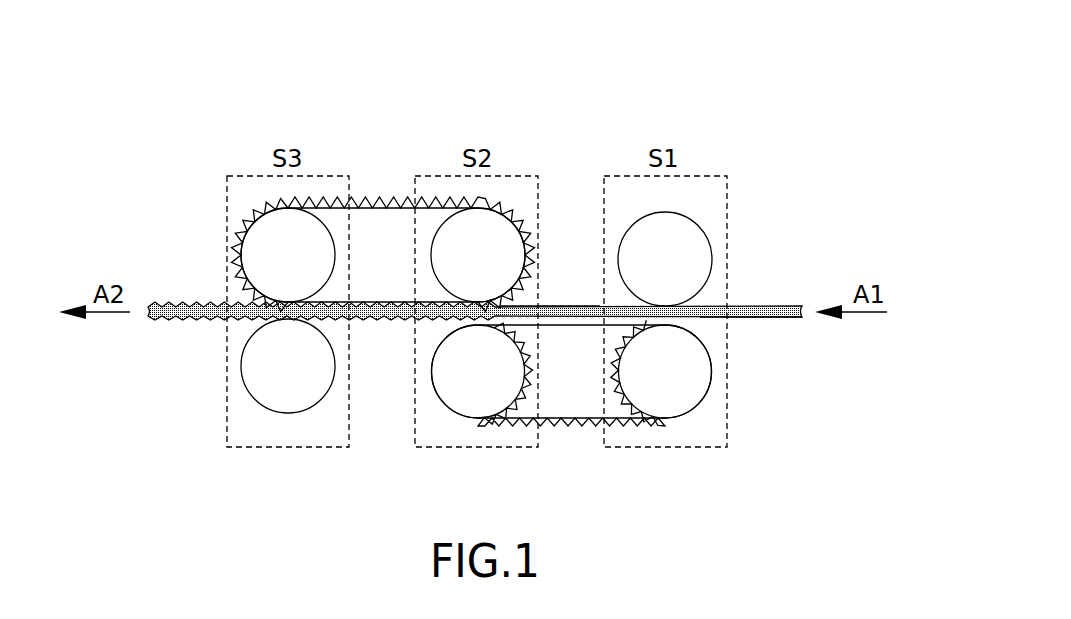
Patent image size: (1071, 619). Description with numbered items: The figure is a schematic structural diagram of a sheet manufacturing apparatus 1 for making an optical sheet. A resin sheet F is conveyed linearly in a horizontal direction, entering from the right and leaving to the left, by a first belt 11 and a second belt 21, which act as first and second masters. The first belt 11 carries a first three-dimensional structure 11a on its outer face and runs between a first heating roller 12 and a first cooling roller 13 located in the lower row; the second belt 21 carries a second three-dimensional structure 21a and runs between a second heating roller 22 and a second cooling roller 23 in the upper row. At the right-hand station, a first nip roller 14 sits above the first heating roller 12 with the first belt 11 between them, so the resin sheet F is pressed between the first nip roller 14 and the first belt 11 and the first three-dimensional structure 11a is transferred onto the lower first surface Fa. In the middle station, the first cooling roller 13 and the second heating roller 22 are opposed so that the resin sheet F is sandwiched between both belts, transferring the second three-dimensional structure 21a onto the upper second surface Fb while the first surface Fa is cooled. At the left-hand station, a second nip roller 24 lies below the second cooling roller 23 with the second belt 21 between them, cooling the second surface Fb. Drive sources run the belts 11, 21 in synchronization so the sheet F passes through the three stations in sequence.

The sheet manufacturing apparatus 1 is at (749, 95).
The first belt 11 is at (572, 411).
The first three-dimensional structure 11a is at (645, 428).
The first heating roller 12 is at (687, 372).
The first cooling roller 13 is at (479, 396).
The first nip roller 14 is at (700, 253).
The second belt 21 is at (383, 211).
The second three-dimensional structure 21a is at (370, 197).
The second heating roller 22 is at (512, 250).
The second cooling roller 23 is at (255, 250).
The second nip roller 24 is at (288, 397).
The resin sheet F is at (778, 304).
The first surface Fa is at (783, 319).
The second surface Fb is at (574, 304).